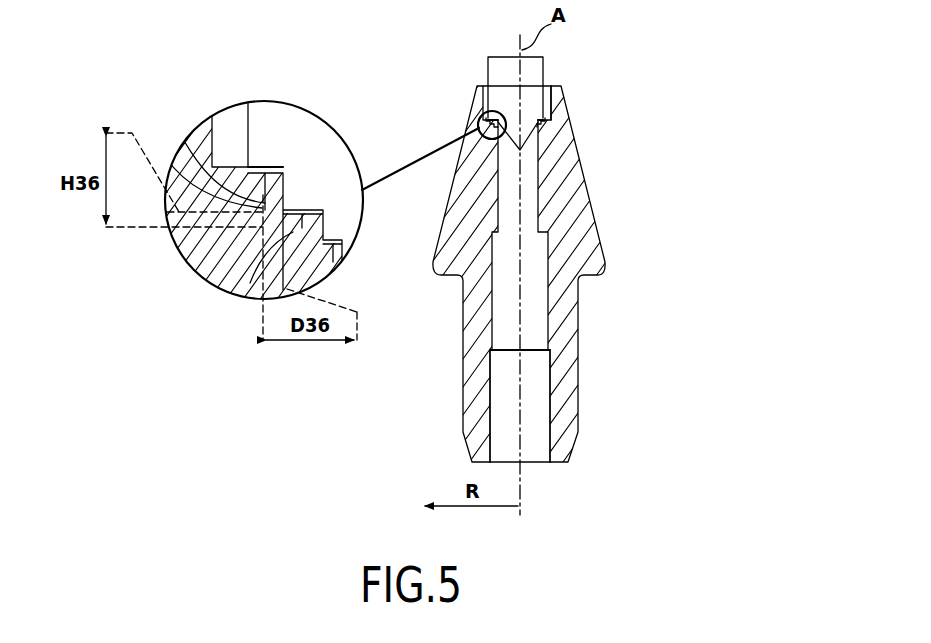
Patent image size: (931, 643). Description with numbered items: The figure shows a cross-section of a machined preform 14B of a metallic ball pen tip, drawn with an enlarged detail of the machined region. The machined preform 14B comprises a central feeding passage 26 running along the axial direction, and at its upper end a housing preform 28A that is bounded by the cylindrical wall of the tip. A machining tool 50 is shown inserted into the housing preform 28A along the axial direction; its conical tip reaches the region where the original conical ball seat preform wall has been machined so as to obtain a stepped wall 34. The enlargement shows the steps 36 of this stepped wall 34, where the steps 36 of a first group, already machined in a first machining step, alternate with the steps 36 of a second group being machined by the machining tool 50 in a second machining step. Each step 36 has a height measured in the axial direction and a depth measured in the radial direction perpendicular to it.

The machined preform 14B is at (580, 200).
The feeding passage 26 is at (530, 383).
The housing preform 28A is at (554, 86).
The stepped wall 34 is at (276, 182).
The steps 36 is at (222, 187).
The machining tool 50 is at (507, 62).